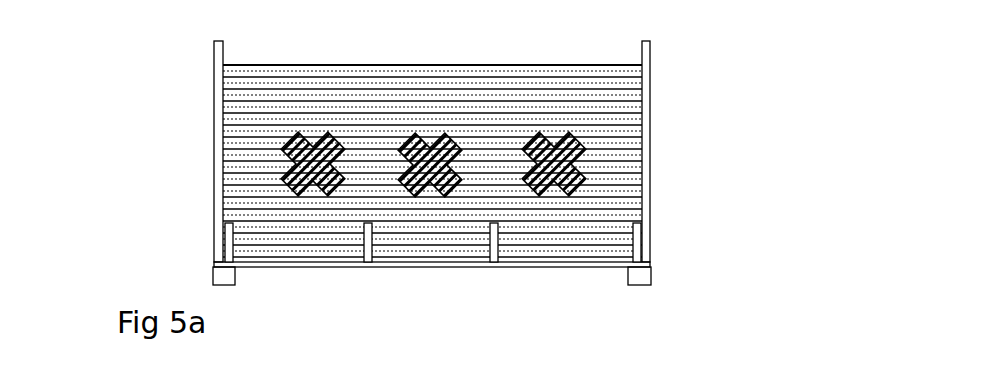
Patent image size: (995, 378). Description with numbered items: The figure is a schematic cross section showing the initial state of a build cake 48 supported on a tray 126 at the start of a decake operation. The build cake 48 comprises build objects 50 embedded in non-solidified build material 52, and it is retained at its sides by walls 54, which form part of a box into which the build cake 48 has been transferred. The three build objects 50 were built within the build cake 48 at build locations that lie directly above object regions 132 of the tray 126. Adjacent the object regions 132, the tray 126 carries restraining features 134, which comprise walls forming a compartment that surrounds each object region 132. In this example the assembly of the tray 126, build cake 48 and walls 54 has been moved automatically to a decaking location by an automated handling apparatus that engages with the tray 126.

The build cake 48 is at (238, 112).
The build objects 50 is at (538, 145).
The non-solidified build material 52 is at (583, 95).
The walls 54 is at (202, 149).
The tray 126 is at (186, 270).
The object regions 132 is at (233, 243).
The restraining features 134 is at (233, 242).